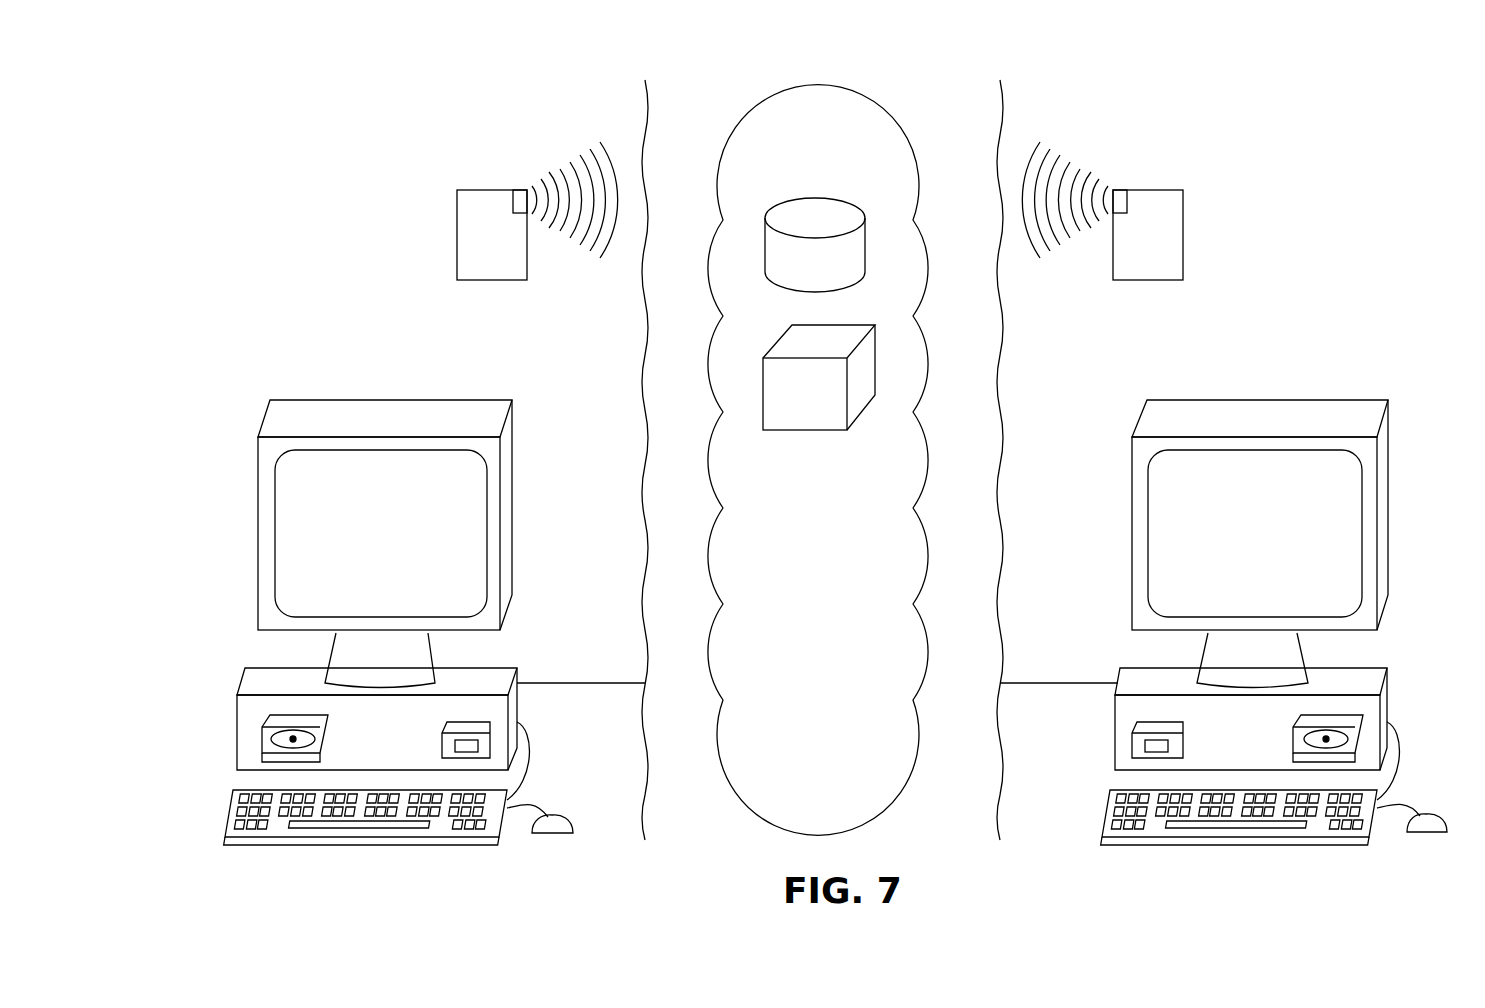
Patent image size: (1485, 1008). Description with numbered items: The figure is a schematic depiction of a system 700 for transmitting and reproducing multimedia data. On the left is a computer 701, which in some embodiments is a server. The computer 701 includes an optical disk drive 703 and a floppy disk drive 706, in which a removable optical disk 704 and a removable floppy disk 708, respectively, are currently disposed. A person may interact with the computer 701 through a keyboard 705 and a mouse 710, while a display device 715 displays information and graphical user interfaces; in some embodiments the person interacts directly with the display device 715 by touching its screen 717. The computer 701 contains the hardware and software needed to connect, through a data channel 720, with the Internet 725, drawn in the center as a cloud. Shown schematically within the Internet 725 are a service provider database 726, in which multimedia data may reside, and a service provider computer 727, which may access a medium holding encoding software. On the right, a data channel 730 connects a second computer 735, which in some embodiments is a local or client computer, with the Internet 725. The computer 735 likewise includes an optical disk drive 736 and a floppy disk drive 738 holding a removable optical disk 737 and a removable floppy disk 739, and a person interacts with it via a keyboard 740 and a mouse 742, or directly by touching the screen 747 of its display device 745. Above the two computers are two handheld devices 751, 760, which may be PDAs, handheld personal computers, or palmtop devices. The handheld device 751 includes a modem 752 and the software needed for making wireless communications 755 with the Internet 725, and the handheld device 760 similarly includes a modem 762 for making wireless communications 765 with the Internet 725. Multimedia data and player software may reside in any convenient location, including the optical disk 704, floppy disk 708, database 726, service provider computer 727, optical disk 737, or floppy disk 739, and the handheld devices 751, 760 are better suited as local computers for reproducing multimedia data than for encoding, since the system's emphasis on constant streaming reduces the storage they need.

The system 700 is at (316, 163).
The computer 701 is at (245, 680).
The optical disk drive 703 is at (265, 722).
The removable optical disk 704 is at (268, 741).
The keyboard 705 is at (250, 843).
The floppy disk drive 706 is at (488, 722).
The removable floppy disk 708 is at (487, 752).
The mouse 710 is at (555, 835).
The display device 715 is at (490, 403).
The screen 717 is at (343, 470).
The data channel 720 is at (608, 683).
The Internet 725 is at (710, 553).
The service provider database 726 is at (811, 207).
The service provider computer 727 is at (825, 420).
The data channel 730 is at (1058, 683).
The computer 735 is at (1390, 668).
The optical disk drive 736 is at (1363, 722).
The removable optical disk 737 is at (1360, 745).
The floppy disk drive 738 is at (1135, 722).
The removable floppy disk 739 is at (1140, 752).
The keyboard 740 is at (1110, 843).
The mouse 742 is at (1426, 834).
The display device 745 is at (1305, 405).
The screen 747 is at (1203, 472).
The handheld device 751 is at (457, 208).
The modem 752 is at (520, 193).
The wireless communications 755 is at (582, 152).
The handheld device 760 is at (1183, 222).
The modem 762 is at (1122, 193).
The wireless communications 765 is at (1056, 152).